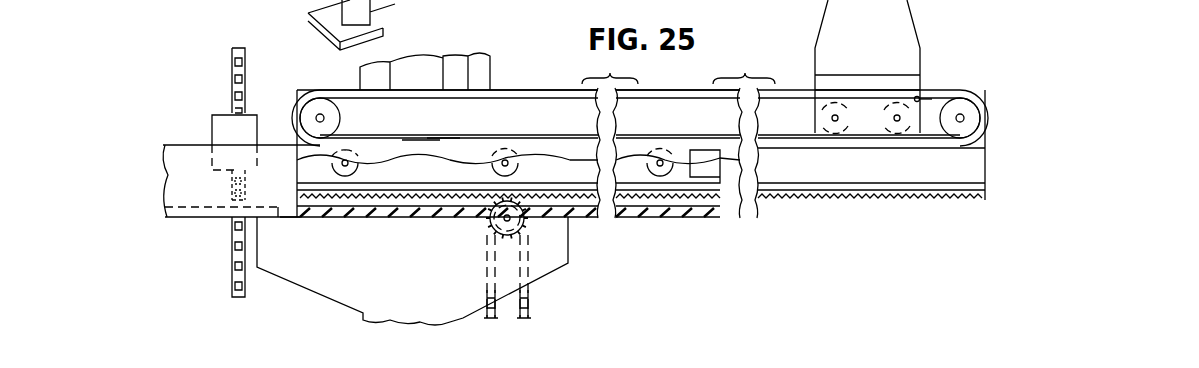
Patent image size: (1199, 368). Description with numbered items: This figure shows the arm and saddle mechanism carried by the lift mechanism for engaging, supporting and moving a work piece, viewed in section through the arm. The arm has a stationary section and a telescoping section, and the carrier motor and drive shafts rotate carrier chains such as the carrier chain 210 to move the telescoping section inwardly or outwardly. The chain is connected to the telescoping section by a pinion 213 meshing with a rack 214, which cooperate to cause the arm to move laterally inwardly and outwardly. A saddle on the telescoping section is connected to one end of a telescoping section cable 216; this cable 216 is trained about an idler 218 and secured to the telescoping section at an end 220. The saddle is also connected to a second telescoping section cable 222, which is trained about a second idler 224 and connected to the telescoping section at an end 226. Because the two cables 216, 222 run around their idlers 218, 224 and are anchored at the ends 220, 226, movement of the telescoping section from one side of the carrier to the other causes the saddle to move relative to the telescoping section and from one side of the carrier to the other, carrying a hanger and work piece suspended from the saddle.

The carrier chain 210 is at (477, 330).
The pinion 213 is at (525, 233).
The rack 214 is at (886, 200).
The telescoping section cable 216 is at (494, 100).
The idler 218 is at (320, 98).
The end 220 is at (402, 140).
The second telescoping section cable 222 is at (935, 98).
The idler 224 is at (985, 62).
The end 226 is at (427, 138).